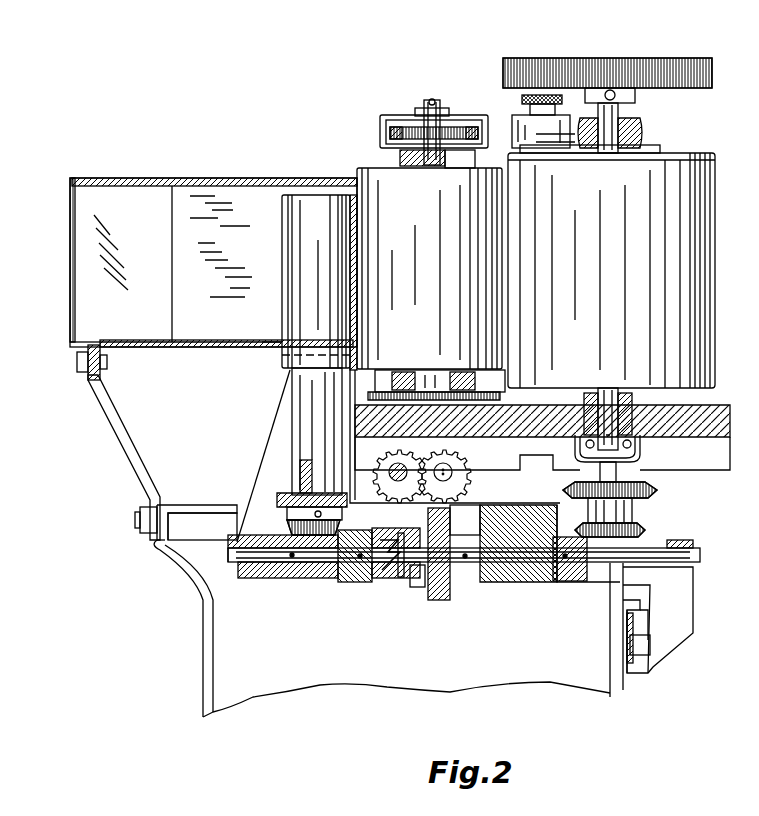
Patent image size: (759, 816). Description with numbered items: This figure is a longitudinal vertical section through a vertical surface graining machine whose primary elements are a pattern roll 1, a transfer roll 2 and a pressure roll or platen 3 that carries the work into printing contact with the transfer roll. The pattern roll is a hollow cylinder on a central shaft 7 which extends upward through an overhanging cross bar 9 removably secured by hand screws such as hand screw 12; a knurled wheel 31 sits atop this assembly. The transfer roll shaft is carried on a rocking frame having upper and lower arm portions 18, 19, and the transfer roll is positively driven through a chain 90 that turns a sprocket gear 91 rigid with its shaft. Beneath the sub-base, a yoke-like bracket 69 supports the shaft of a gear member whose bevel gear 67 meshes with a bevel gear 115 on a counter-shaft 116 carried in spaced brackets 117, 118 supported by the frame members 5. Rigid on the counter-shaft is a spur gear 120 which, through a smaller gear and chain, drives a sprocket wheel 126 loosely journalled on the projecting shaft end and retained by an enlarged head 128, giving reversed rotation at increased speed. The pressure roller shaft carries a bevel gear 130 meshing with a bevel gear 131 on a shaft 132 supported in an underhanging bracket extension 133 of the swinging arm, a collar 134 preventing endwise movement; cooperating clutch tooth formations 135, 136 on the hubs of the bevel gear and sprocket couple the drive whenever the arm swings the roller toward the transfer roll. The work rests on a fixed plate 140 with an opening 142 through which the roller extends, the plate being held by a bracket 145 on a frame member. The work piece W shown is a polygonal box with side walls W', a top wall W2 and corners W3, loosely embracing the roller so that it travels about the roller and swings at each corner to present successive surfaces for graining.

The pattern roll 1 is at (611, 270).
The transfer roll 2 is at (429, 268).
The pressure roll or platen 3 is at (319, 282).
The frame members 5 is at (382, 611).
The central shaft 7 is at (640, 124).
The overhanging cross bar 9 is at (640, 142).
The hand screw 12 is at (520, 102).
The upper arm portion 18 is at (400, 158).
The lower arm portion 19 is at (482, 386).
The knurled hand wheel 31 is at (652, 62).
The bevel gear 67 is at (642, 536).
The yoke-like bracket 69 is at (664, 468).
The chain 90 is at (394, 128).
The sprocket gear 91 is at (410, 128).
The bevel gear 115 is at (580, 583).
The counter-shaft 116 is at (628, 565).
The bracket 117 is at (520, 527).
The bracket 118 is at (690, 598).
The spur gear 120 is at (452, 598).
The sprocket wheel 126 is at (418, 590).
The enlarged head 128 is at (400, 580).
The bevel gear 130 is at (276, 508).
The bevel gear 131 is at (345, 582).
The shaft 132 is at (280, 560).
The underhanging bracket portion or extension 133 is at (292, 575).
The collar 134 is at (237, 540).
The clutch tooth formation 135 is at (395, 536).
The clutch tooth formation 136 is at (388, 580).
The fixed plate 140 is at (186, 346).
The opening 142 is at (264, 346).
The bracket 145 is at (112, 420).
The piece of work W is at (195, 249).
The side walls W' is at (133, 248).
The top wall W2 is at (221, 222).
The corners W3 is at (172, 272).